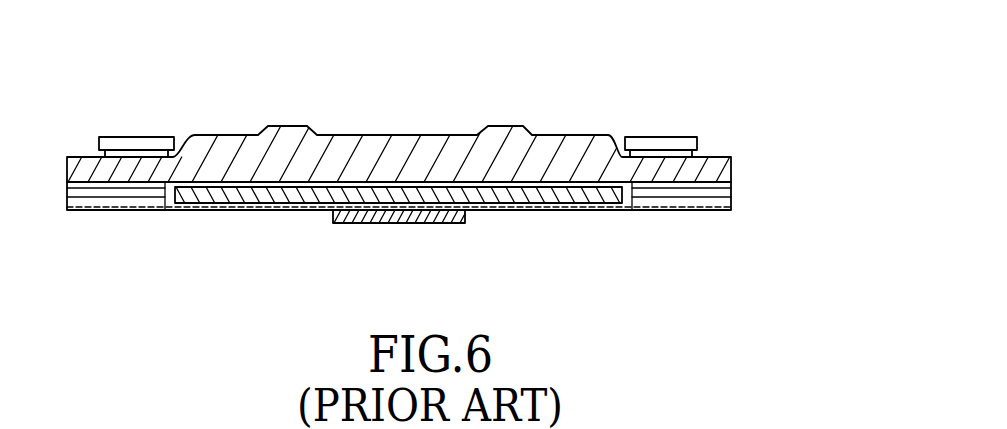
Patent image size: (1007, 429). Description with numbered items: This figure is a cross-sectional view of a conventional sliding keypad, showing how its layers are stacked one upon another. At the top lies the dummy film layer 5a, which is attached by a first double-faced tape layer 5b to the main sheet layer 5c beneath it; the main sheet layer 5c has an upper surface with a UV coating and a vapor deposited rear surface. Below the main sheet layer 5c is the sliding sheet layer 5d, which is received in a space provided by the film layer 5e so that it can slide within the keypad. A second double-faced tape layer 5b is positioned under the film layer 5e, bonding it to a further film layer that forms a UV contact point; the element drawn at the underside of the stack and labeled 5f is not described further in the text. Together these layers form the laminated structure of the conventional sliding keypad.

The dummy film layer 5a is at (659, 140).
The double-faced tape layer 5b is at (731, 187).
The main sheet layer 5c is at (572, 142).
The sliding sheet layer 5d is at (582, 198).
The film layer 5e is at (731, 193).
The heat dissipation protrusion 5f is at (390, 223).